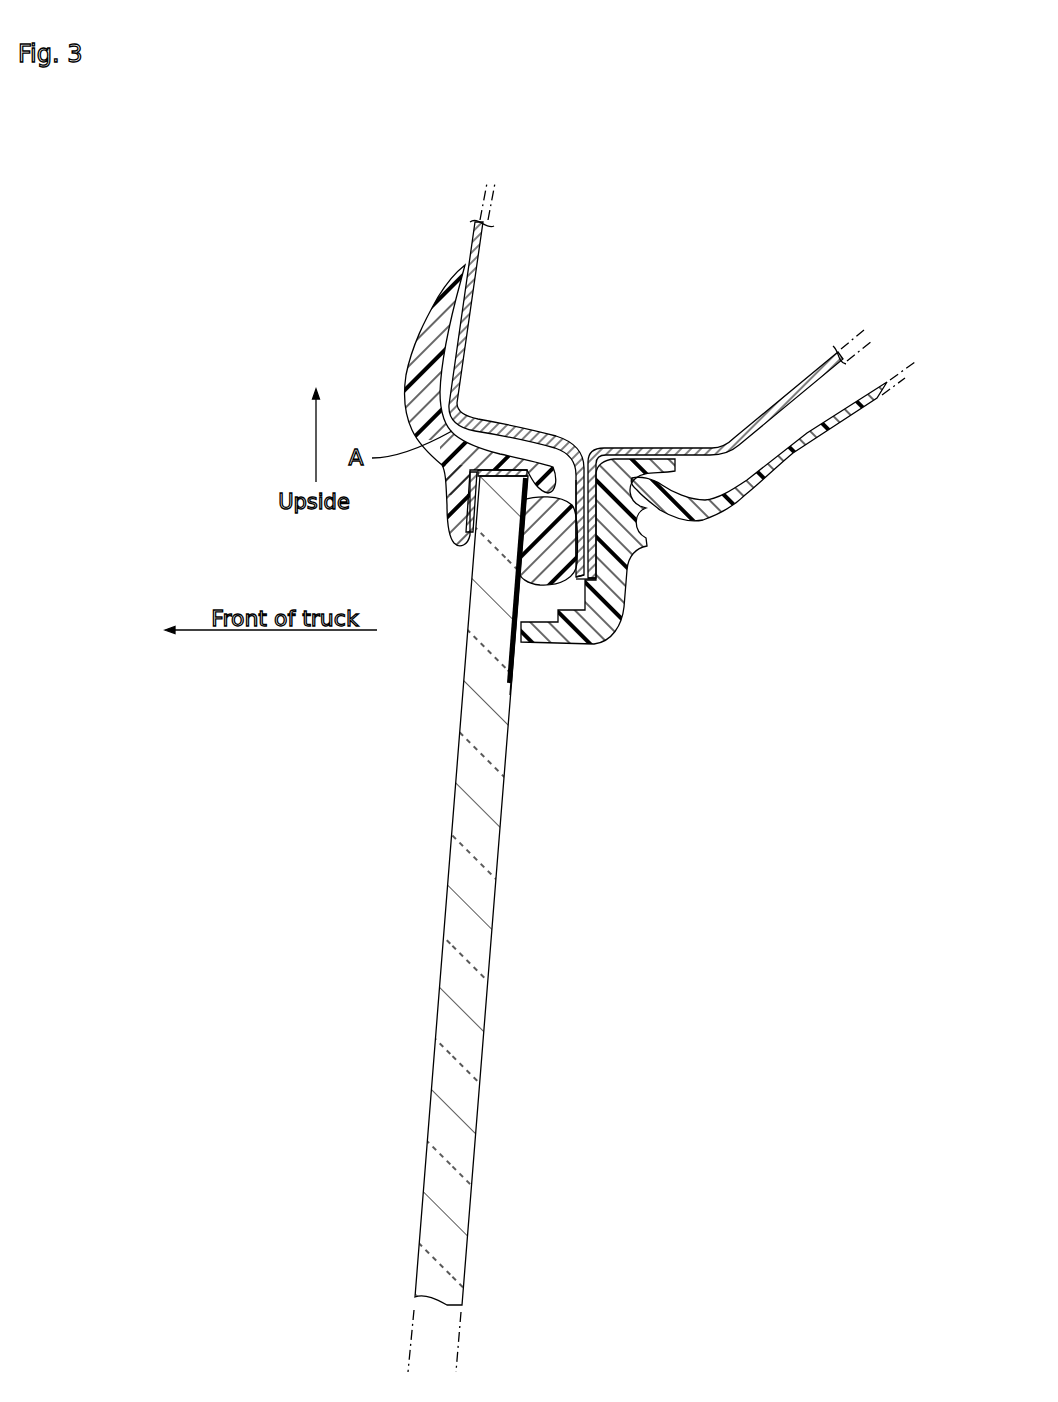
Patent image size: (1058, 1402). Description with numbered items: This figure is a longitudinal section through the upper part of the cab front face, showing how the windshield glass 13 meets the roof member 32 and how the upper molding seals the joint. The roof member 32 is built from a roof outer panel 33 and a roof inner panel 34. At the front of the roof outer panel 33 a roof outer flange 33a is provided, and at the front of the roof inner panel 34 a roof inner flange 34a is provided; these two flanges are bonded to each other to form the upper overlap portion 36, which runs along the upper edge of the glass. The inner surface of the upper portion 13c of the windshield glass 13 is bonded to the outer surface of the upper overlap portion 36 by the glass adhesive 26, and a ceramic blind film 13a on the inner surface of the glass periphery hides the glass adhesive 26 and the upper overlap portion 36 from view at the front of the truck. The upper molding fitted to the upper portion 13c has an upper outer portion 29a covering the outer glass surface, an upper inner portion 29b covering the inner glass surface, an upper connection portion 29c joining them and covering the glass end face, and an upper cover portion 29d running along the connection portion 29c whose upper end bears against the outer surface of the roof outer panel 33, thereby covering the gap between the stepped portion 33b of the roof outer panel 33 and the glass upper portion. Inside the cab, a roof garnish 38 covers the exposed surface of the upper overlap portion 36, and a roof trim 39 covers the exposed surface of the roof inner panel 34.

The windshield glass 13 is at (430, 1003).
The blind film 13a is at (513, 662).
The upper portion of the windshield glass 13c is at (508, 488).
The glass adhesive 26 is at (526, 572).
The upper outer portion 29a is at (445, 514).
The upper inner portion 29b is at (562, 497).
The upper connection portion 29c is at (462, 434).
The upper cover portion 29d is at (412, 326).
The roof member 32 is at (443, 231).
The roof outer panel 33 is at (462, 253).
The roof outer flange 33a is at (580, 580).
The stepped portion 33b is at (566, 455).
The roof inner panel 34 is at (792, 415).
The roof inner flange 34a is at (592, 582).
The upper overlap portion 36 is at (657, 774).
The roof garnish 38 is at (630, 594).
The roof trim 39 is at (763, 483).